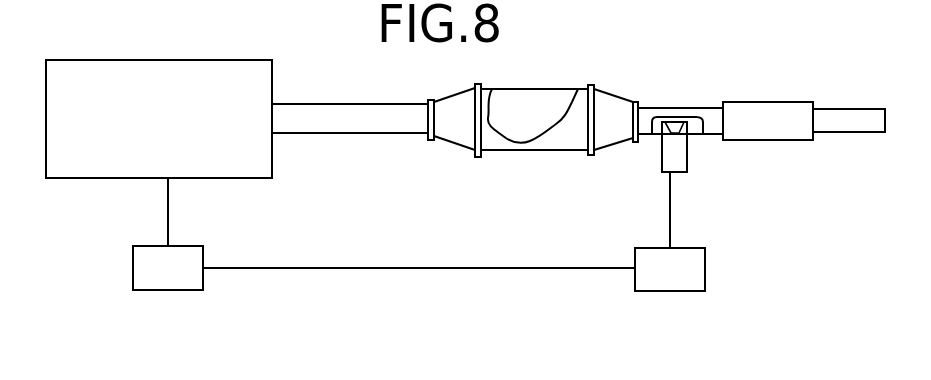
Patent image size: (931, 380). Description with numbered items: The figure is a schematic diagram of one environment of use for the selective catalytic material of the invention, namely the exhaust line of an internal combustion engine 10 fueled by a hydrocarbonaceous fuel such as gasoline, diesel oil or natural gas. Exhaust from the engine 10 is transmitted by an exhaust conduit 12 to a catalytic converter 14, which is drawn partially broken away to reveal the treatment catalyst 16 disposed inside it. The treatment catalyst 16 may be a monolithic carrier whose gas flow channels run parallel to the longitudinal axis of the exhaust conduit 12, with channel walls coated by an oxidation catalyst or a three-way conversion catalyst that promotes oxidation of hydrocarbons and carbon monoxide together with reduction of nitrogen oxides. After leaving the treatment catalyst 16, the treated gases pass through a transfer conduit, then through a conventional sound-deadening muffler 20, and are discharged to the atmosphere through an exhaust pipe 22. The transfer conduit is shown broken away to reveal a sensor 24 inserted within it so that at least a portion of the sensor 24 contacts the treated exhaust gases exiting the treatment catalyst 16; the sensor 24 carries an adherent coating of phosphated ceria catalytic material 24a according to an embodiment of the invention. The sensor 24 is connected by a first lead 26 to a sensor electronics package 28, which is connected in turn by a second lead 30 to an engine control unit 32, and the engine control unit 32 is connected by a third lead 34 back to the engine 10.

The internal combustion engine 10 is at (228, 80).
The exhaust conduit 12 is at (342, 117).
The catalytic converter 14 is at (552, 150).
The treatment catalyst 16 is at (530, 117).
The muffler 20 is at (757, 110).
The exhaust pipe 22 is at (845, 122).
The sensor 24 is at (692, 150).
The phosphated ceria catalytic material 24a is at (680, 128).
The first lead 26 is at (670, 212).
The sensor electronics package 28 is at (693, 270).
The second lead 30 is at (418, 270).
The engine control unit 32 is at (132, 270).
The third lead 34 is at (168, 205).